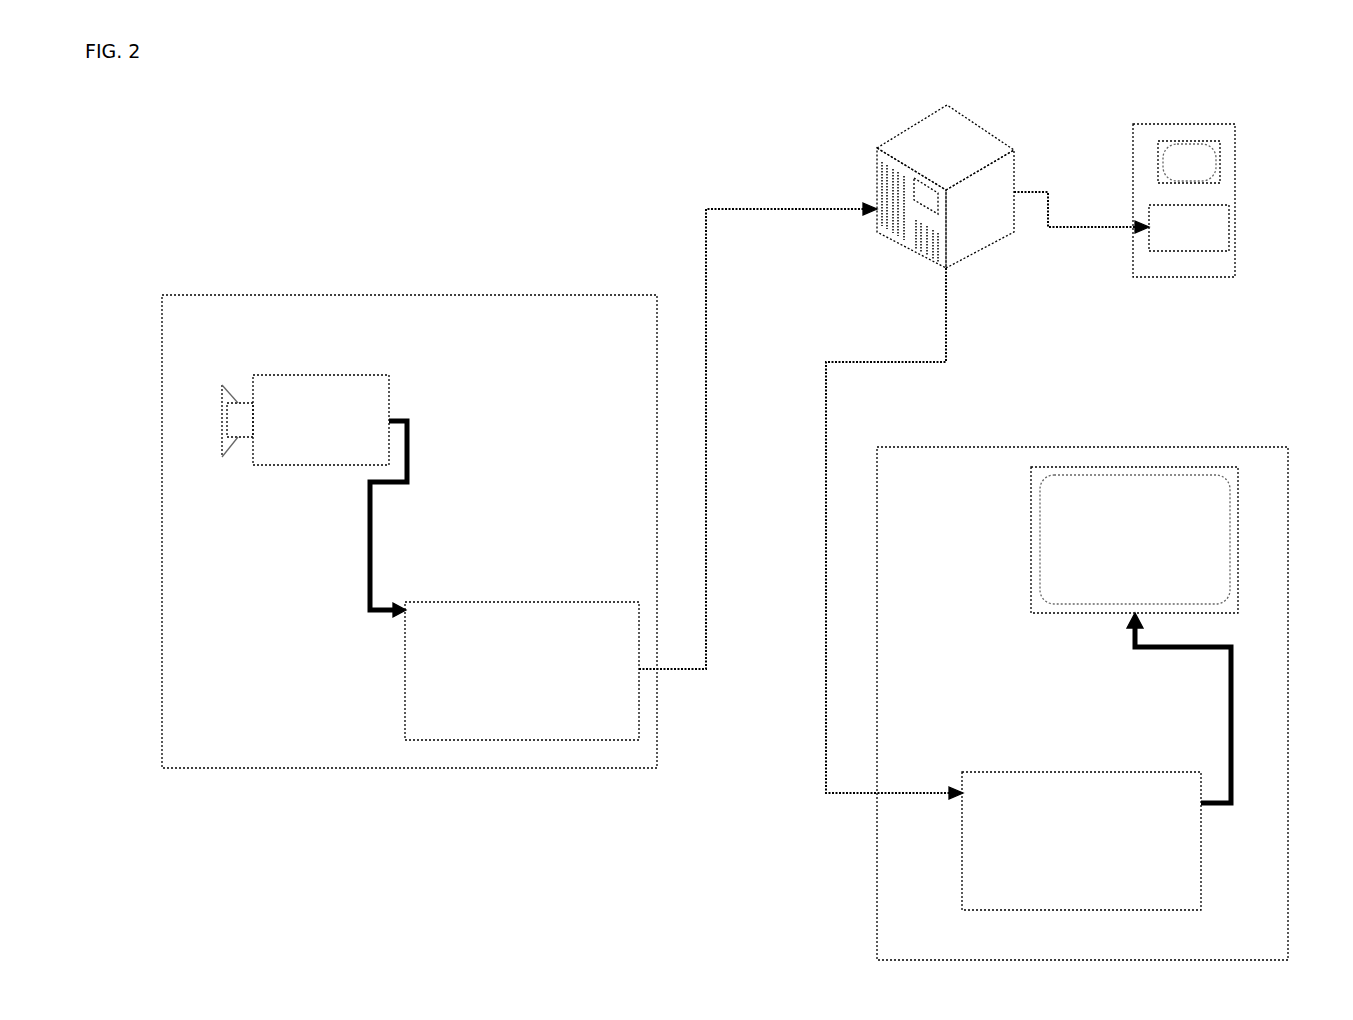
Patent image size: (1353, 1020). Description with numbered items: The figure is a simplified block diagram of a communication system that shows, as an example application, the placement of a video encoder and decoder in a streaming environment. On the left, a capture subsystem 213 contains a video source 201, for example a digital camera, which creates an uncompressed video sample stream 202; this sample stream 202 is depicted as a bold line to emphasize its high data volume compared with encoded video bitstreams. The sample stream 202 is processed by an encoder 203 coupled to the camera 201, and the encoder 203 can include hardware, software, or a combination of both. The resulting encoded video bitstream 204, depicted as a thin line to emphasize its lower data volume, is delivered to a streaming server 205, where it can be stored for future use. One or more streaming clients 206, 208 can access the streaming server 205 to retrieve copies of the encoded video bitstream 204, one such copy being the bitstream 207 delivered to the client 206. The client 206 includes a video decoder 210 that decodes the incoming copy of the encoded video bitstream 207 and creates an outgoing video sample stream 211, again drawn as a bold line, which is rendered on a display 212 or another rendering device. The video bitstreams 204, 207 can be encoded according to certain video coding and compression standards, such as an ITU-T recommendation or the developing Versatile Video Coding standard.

The video source 201 is at (322, 375).
The video sample stream 202 is at (366, 552).
The encoder 203 is at (533, 602).
The encoded video bitstream 204 is at (706, 242).
The streaming server 205 is at (877, 180).
The streaming client 206 is at (1062, 228).
The copy of the encoded video bitstream 207 is at (826, 600).
The streaming client 208 is at (1235, 175).
The video decoder 210 is at (962, 887).
The outgoing video sample stream 211 is at (1228, 703).
The display 212 is at (1031, 538).
The capture subsystem 213 is at (315, 768).